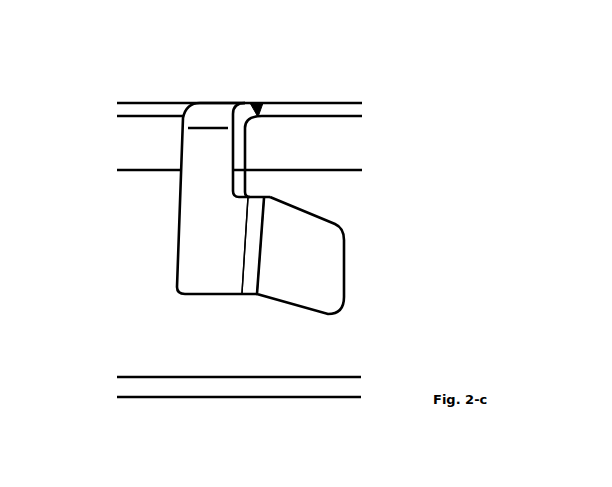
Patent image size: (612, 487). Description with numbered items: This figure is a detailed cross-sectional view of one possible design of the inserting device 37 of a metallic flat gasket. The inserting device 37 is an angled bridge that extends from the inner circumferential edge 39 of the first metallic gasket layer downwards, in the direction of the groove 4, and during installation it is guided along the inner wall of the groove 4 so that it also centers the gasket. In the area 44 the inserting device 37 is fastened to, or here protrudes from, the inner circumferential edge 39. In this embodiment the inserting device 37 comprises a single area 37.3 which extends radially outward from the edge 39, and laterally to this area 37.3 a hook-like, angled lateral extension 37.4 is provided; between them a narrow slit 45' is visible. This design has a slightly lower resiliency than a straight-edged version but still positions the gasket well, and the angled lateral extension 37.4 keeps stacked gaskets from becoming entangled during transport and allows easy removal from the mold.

The inner circumferential edge 39 is at (345, 107).
The area 44 is at (262, 102).
The inserting device 37 is at (245, 273).
The single area 37.3 is at (198, 190).
The angled lateral extension 37.4 is at (322, 276).
The slit between clamping parts 45' is at (263, 320).
The groove 4 is at (122, 355).